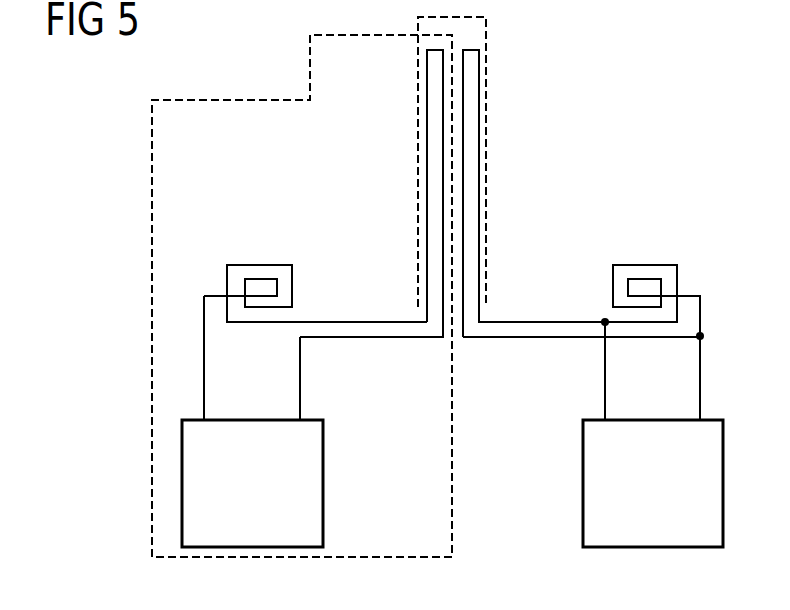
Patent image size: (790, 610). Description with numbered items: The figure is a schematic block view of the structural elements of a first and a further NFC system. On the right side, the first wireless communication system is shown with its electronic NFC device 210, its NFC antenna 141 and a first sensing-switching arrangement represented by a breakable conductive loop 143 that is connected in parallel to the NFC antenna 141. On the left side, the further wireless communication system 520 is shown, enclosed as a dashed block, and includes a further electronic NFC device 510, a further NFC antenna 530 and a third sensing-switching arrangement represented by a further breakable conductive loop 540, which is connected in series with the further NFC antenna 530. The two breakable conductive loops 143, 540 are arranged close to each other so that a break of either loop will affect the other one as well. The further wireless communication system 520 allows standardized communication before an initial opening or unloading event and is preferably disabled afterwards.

The further wireless communication system 520 is at (152, 182).
The further breakable conductive loop 540 is at (437, 152).
The breakable conductive loop 143 is at (479, 182).
The further NFC antenna 530 is at (262, 276).
The NFC antenna 141 is at (647, 275).
The further electronic NFC device 510 is at (323, 482).
The electronic NFC device 210 is at (583, 476).